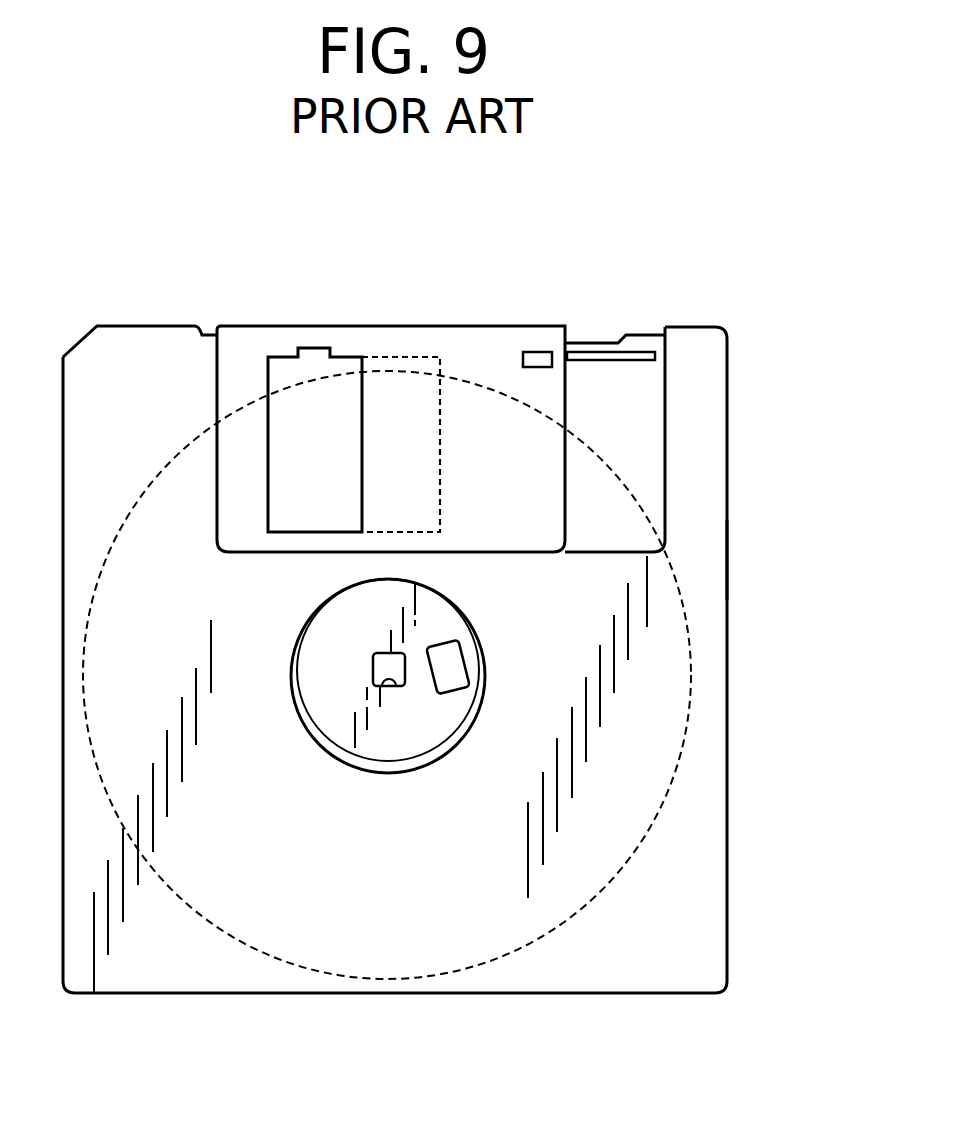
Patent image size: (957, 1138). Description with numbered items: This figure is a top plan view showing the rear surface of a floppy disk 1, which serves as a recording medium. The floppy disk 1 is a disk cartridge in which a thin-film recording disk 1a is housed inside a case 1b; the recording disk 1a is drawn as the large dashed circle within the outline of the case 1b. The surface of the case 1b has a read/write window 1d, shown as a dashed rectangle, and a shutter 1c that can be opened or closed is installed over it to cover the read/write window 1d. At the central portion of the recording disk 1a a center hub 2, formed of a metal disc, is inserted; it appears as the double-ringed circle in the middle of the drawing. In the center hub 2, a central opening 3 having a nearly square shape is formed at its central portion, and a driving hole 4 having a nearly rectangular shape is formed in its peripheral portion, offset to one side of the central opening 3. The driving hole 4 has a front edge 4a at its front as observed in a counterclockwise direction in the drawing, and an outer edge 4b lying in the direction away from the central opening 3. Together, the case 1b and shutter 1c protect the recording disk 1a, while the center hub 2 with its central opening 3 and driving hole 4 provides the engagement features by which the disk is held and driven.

The floppy disk 1 is at (748, 377).
The recording disk 1a is at (603, 460).
The case 1b is at (697, 545).
The shutter 1c is at (400, 338).
The read/write window 1d is at (440, 446).
The center hub 2 is at (320, 675).
The central opening 3 is at (395, 687).
The driving hole 4 is at (456, 672).
The front edge 4a is at (442, 643).
The outer edge 4b is at (462, 648).